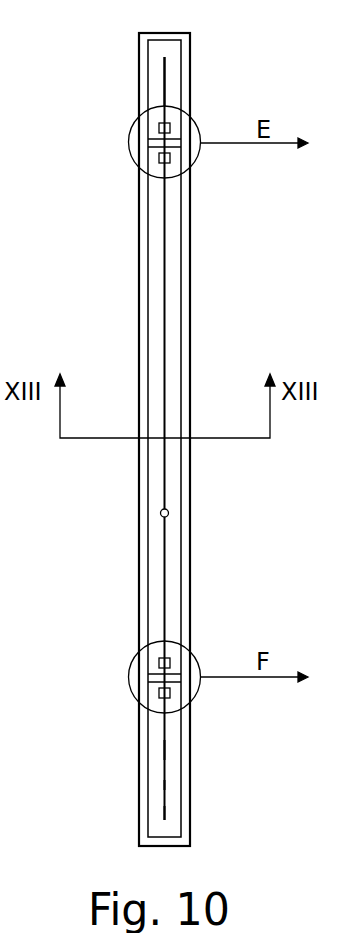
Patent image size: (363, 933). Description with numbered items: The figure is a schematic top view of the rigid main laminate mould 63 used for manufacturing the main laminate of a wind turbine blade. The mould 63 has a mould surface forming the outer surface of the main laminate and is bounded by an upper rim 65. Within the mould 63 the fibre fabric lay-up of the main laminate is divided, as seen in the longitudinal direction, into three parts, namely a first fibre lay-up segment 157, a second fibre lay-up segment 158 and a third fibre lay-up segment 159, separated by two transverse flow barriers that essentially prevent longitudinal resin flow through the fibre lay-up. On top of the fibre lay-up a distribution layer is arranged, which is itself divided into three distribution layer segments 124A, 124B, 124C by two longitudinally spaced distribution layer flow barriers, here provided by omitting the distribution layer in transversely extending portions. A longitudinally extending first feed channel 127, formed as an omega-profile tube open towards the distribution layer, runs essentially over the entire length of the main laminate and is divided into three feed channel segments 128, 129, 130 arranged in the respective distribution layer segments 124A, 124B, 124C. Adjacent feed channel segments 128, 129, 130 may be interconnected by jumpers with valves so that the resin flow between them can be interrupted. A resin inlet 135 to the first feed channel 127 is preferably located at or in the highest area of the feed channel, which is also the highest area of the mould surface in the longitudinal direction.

The main laminate mould 63 is at (197, 471).
The upper rim 65 is at (147, 254).
The feed channel segment 130 is at (167, 69).
The distribution layer segment 124C is at (153, 60).
The third fibre lay-up segment 159 is at (153, 98).
The second fibre lay-up segment 158 is at (170, 272).
The distribution layer segment 124B is at (170, 306).
The resin inlet 135 is at (160, 513).
The feed channel segment 129 is at (163, 572).
The feed channel segment 128 is at (163, 741).
The first fibre lay-up segment 157 is at (170, 757).
The distribution layer segment 124A is at (170, 789).
The first feed channel 127 is at (173, 813).